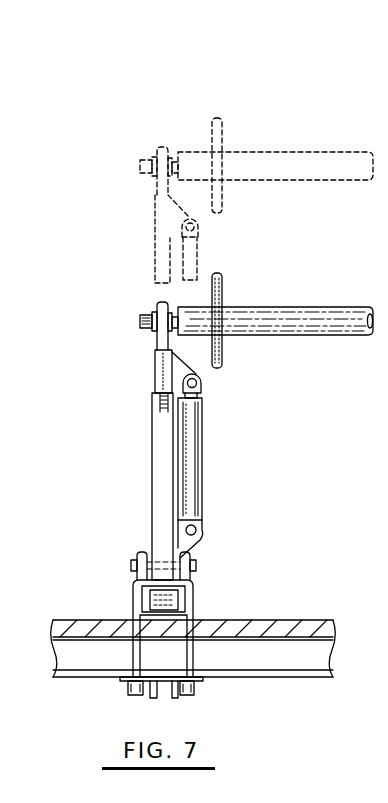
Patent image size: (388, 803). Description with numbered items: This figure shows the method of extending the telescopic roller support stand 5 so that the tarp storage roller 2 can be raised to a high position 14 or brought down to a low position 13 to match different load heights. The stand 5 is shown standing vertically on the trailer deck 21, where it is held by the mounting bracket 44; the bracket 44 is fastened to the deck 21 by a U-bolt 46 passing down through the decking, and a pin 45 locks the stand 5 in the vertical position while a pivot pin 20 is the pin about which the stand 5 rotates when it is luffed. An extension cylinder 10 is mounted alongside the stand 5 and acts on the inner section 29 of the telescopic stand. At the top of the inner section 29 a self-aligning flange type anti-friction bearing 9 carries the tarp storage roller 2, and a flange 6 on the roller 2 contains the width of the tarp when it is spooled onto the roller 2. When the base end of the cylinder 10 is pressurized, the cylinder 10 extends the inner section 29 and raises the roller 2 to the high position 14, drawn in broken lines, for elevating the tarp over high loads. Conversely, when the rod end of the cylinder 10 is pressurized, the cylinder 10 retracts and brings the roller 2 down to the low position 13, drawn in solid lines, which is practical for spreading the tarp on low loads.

The tarp storage roller 2 is at (309, 154).
The support stand 5 is at (160, 457).
The flange 6 is at (222, 130).
The flange type anti-friction bearing 9 is at (152, 157).
The extension cylinder 10 is at (192, 480).
The low position 13 is at (312, 277).
The high position 14 is at (300, 112).
The pivot pin 20 is at (136, 565).
The trailer deck 21 is at (258, 620).
The inner section 29 is at (163, 243).
The mounting bracket 44 is at (140, 552).
The pin 45 is at (150, 607).
The U-bolt 46 is at (193, 602).